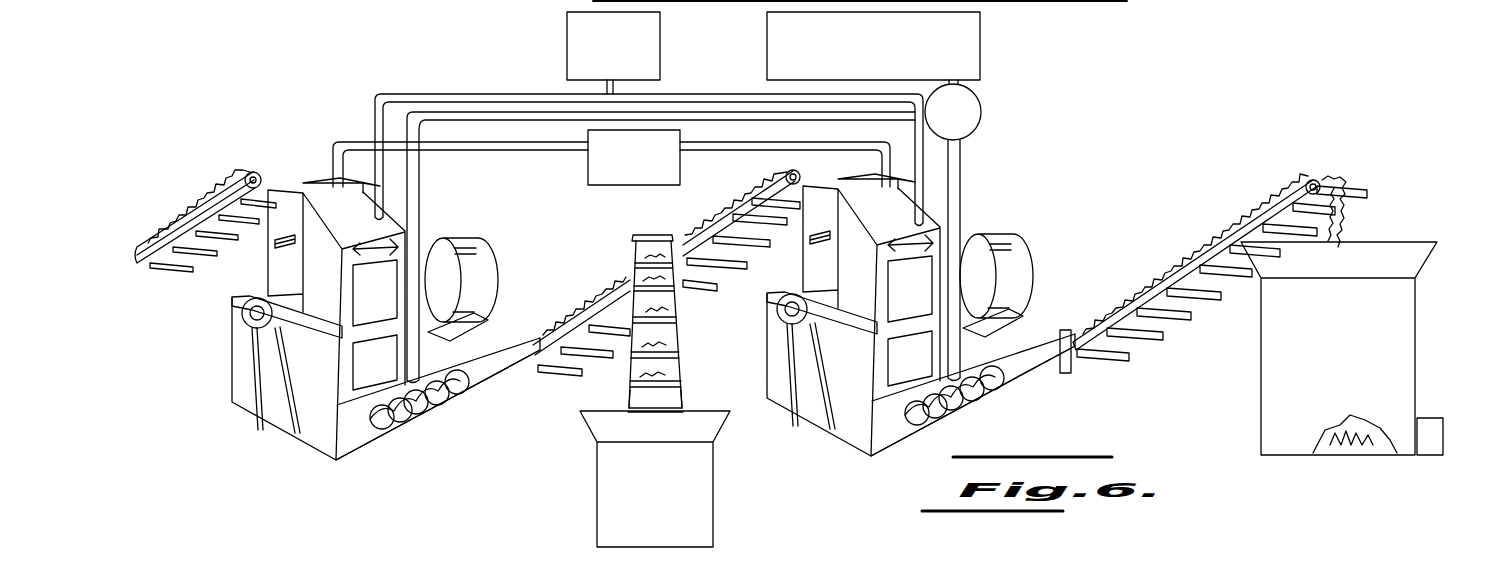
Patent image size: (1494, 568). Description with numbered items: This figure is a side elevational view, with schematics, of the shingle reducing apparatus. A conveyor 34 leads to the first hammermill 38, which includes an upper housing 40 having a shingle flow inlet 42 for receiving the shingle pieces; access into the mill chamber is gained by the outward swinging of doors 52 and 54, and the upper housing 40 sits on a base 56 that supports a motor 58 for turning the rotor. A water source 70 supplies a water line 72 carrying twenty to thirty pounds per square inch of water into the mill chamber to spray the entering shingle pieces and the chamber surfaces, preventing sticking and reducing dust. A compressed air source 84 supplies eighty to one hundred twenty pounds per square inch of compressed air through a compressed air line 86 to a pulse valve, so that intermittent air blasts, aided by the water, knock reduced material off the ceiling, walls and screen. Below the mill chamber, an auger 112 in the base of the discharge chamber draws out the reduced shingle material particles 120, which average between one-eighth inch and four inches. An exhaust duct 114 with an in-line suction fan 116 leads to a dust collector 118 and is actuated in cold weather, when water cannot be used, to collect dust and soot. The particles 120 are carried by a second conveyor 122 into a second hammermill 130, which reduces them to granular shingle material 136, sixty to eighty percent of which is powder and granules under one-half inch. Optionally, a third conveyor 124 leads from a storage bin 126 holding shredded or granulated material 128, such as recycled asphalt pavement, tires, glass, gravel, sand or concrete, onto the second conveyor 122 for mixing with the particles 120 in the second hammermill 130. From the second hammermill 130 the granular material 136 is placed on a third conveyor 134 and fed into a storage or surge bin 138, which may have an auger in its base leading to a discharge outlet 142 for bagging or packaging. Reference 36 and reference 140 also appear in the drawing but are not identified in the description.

The conveyor 34 is at (206, 186).
The first processing stage 36 is at (427, 88).
The first hammermill 38 is at (300, 157).
The upper housing 40 is at (250, 262).
The shingle flow inlet 42 is at (321, 173).
The door 52 is at (363, 285).
The door 54 is at (367, 362).
The base 56 is at (356, 420).
The motor 58 is at (477, 258).
The water source 70 is at (634, 157).
The water line 72 is at (486, 152).
The compressed air source 84 is at (613, 53).
The compressed air line 86 is at (720, 88).
The auger 112 is at (447, 403).
The exhaust duct 114 is at (421, 195).
The in-line suction fan 116 is at (955, 112).
The dust collector 118 is at (873, 48).
The reduced shingle material particles 120 is at (572, 298).
The second conveyor 122 is at (628, 274).
The third conveyor 124 is at (629, 389).
The storage bin 126 is at (697, 490).
The shredded or granulated material 128 is at (678, 365).
The second hammermill 130 is at (1045, 270).
The third conveyor 134 is at (1287, 183).
The granular shingle material 136 is at (1177, 253).
The storage or surge bin 138 is at (1287, 362).
The product pile 140 is at (1320, 450).
The discharge outlet 142 is at (1430, 435).